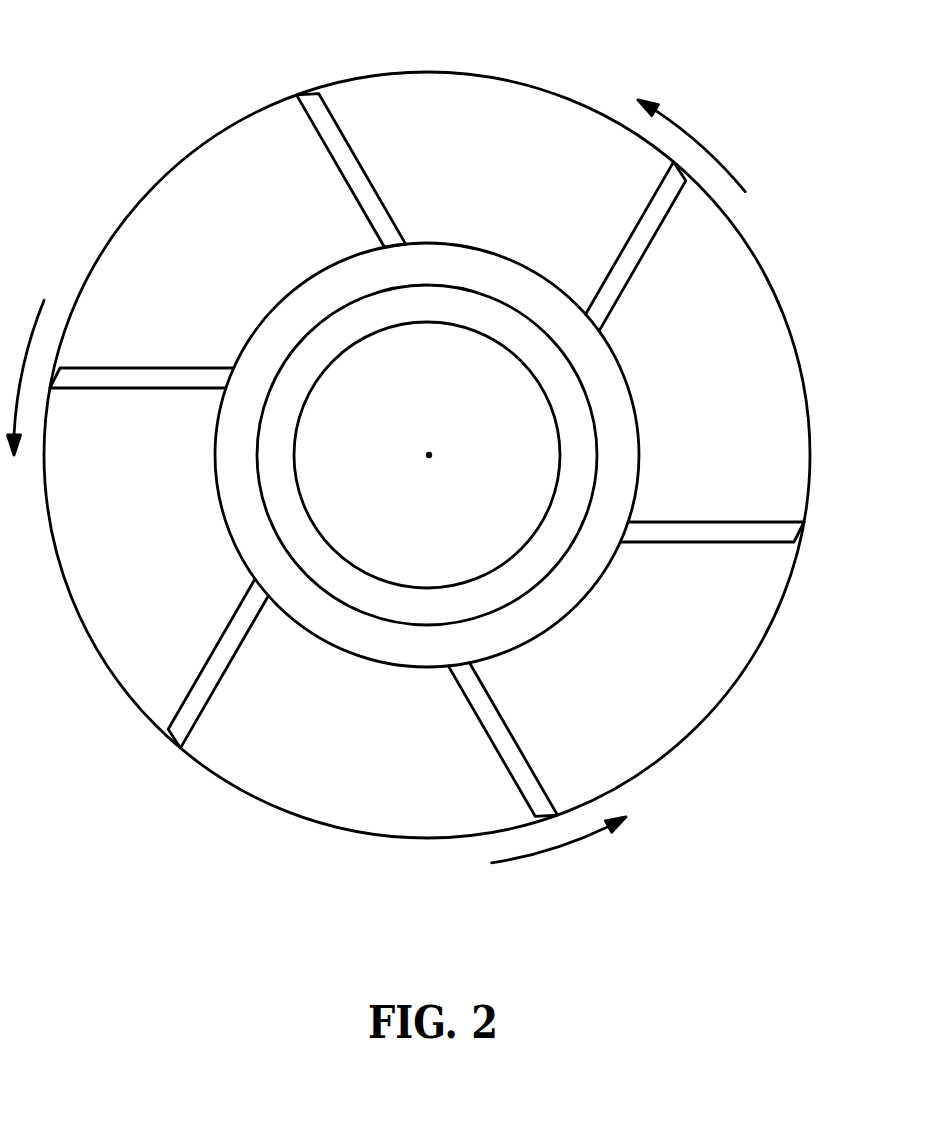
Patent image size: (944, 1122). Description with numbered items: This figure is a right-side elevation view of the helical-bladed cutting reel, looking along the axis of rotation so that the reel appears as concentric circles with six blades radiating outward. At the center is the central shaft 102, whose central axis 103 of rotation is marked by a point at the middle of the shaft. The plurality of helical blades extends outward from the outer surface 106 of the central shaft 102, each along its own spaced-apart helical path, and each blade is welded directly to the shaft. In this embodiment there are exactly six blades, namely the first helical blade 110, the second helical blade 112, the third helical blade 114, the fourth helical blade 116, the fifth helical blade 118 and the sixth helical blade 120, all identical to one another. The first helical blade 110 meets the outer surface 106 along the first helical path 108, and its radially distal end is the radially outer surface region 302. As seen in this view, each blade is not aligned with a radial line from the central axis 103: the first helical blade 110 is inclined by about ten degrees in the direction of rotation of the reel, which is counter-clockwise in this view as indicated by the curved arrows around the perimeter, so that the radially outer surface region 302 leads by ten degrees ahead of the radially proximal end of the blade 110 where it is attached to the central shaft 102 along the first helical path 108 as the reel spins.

The radially outer surface region 302 is at (290, 76).
The central shaft 102 is at (447, 532).
The central axis 103 is at (429, 455).
The outer surface 106 is at (492, 250).
The first helical path 108 is at (405, 240).
The first helical blade 110 is at (345, 163).
The second helical blade 112 is at (640, 243).
The third helical blade 114 is at (705, 540).
The fourth helical blade 116 is at (497, 717).
The fifth helical blade 118 is at (225, 653).
The sixth helical blade 120 is at (143, 370).